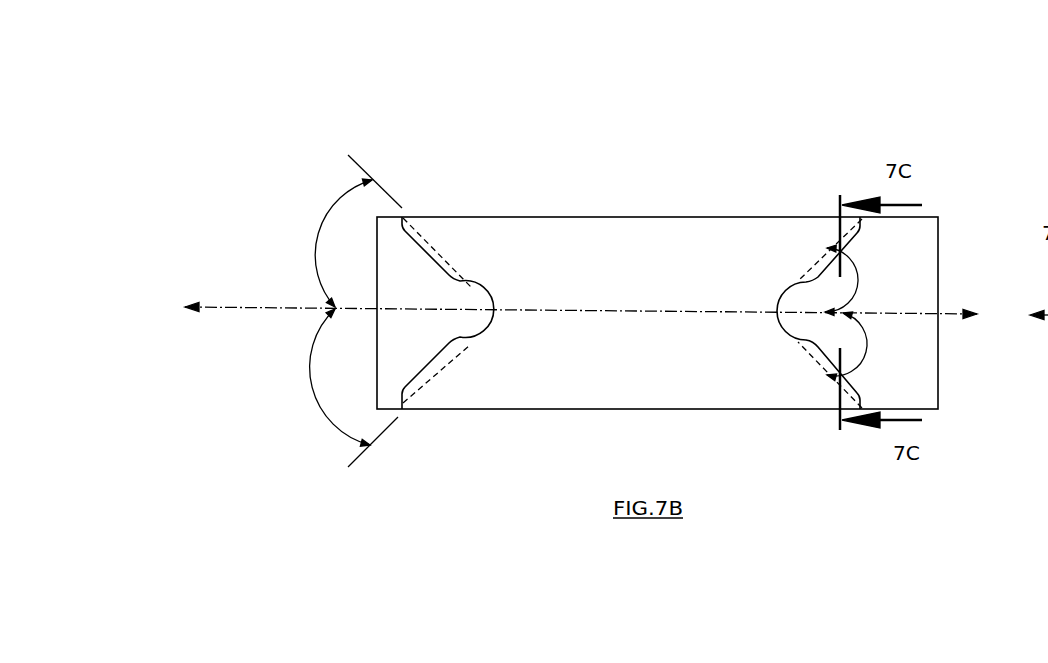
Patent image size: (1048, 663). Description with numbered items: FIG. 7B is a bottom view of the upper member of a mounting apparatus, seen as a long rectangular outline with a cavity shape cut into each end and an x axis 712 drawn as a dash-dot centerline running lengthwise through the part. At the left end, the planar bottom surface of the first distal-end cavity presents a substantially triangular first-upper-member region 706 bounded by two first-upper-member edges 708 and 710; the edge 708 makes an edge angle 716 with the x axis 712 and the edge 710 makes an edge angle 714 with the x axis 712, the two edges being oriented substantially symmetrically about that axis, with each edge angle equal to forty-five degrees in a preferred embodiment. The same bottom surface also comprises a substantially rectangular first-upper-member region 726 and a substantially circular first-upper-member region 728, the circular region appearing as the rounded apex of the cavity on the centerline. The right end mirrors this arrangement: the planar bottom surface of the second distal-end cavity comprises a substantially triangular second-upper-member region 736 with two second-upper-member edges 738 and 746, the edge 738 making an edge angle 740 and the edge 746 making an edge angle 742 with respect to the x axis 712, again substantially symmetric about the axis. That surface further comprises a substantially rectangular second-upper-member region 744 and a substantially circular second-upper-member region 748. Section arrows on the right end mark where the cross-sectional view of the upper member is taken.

The first-upper-member region 706 is at (425, 285).
The first-upper-member edge 708 is at (443, 375).
The first-upper-member edge 710 is at (446, 253).
The x axis 712 is at (282, 308).
The edge angle 714 is at (330, 210).
The edge angle 716 is at (318, 410).
The first-upper-member region 726 is at (388, 348).
The first-upper-member region 728 is at (466, 298).
The second-upper-member region 736 is at (860, 252).
The second-upper-member edge 738 is at (837, 345).
The edge angle 740 is at (862, 332).
The edge angle 742 is at (855, 265).
The second-upper-member region 744 is at (905, 250).
The second-upper-member edge 746 is at (818, 252).
The second-upper-member region 748 is at (800, 292).